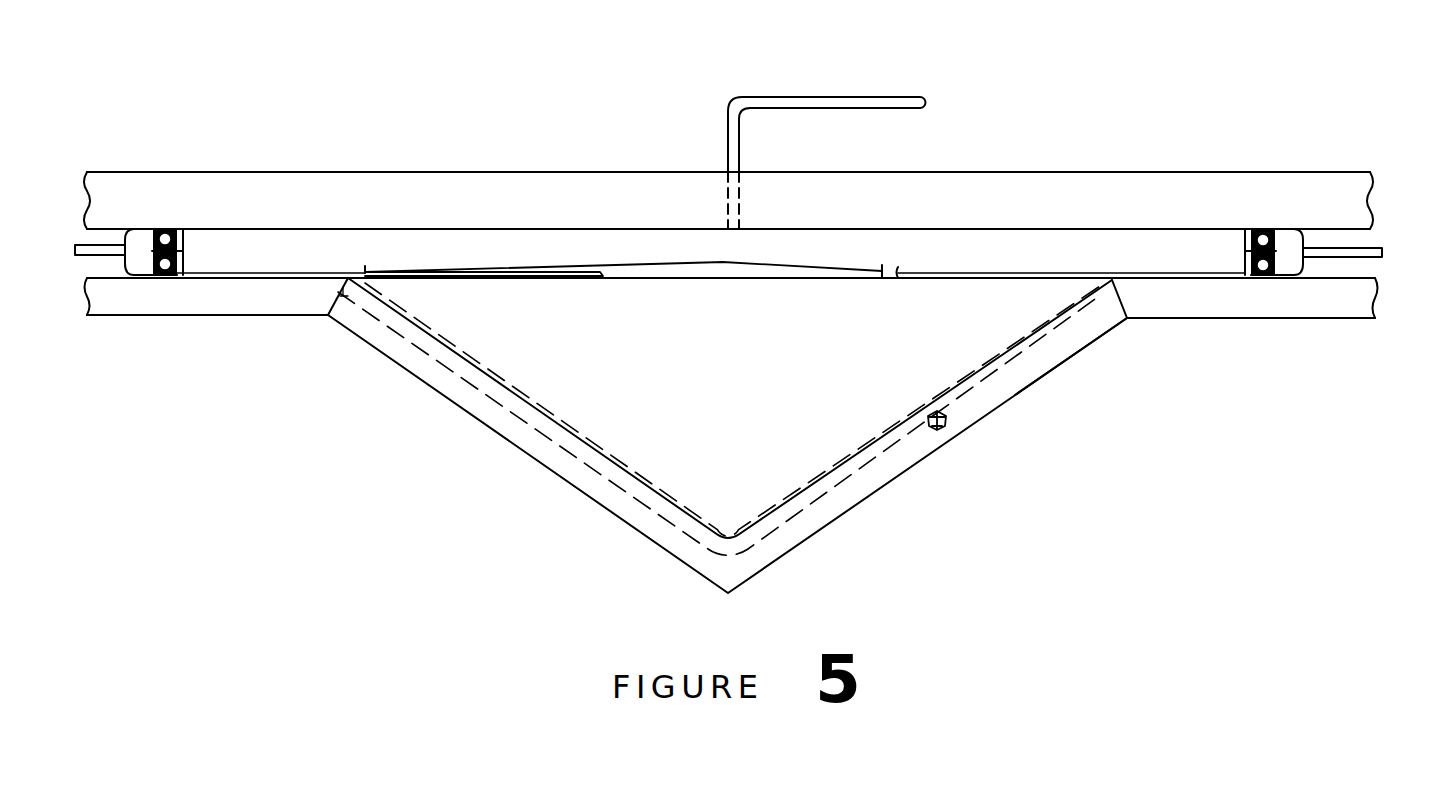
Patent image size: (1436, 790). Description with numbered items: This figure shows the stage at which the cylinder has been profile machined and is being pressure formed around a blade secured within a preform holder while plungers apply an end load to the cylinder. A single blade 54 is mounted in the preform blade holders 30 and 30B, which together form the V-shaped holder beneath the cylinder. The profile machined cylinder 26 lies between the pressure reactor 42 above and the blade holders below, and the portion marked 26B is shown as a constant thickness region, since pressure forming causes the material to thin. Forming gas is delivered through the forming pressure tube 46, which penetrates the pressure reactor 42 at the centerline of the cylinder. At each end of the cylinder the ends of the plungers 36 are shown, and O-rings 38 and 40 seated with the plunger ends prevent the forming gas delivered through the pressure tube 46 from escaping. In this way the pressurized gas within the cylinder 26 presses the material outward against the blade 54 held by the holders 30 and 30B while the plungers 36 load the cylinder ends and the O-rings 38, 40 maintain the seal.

The pressure reactor 42 is at (342, 172).
The forming pressure tube 46 is at (780, 97).
The O-ring 38 is at (163, 272).
The O-ring 40 is at (166, 232).
The plunger 36 is at (1377, 261).
The profile machined cylinder 26 is at (808, 263).
The constant thickness 26B is at (457, 347).
The preform blade holder 30 is at (505, 438).
The preform blade holder 30B is at (1015, 395).
The blade 54 is at (940, 429).